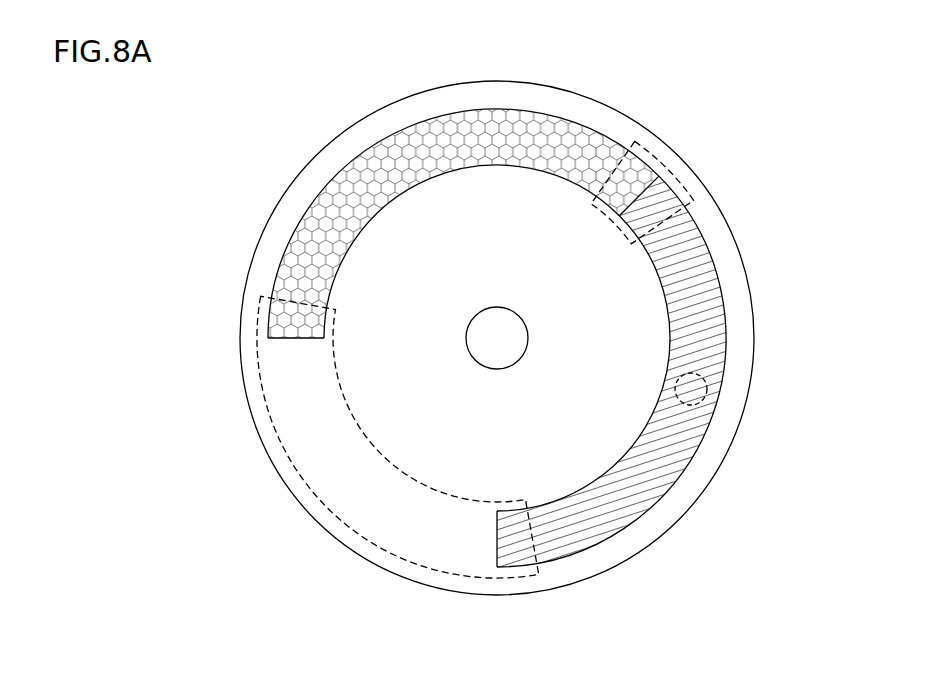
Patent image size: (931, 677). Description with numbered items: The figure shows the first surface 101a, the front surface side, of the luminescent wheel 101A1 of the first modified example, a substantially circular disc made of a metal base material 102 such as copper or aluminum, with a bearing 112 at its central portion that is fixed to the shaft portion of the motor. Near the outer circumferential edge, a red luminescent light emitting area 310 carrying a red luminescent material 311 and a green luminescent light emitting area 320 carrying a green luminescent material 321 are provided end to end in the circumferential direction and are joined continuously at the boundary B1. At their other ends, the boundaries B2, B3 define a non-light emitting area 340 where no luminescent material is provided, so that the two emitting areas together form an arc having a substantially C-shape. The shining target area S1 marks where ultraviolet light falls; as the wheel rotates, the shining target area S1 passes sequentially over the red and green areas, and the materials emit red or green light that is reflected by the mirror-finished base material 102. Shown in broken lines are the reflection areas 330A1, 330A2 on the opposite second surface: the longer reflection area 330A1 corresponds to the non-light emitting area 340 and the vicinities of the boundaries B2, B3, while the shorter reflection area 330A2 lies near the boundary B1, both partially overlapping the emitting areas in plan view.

The first surface 101a is at (348, 138).
The luminescent wheel 101A1 is at (687, 145).
The base material 102 is at (708, 213).
The bearing 112 is at (503, 308).
The red luminescent light emitting area 310 is at (712, 262).
The red luminescent material 311 is at (703, 300).
The green luminescent light emitting area 320 is at (283, 257).
The green luminescent material 321 is at (318, 225).
The reflection area 330A1 is at (267, 423).
The reflection area 330A2 is at (697, 162).
The non-light emitting area 340 is at (322, 452).
The boundary B1 is at (659, 176).
The boundary B2 is at (497, 567).
The boundary B3 is at (268, 338).
The shining target area S1 is at (703, 398).